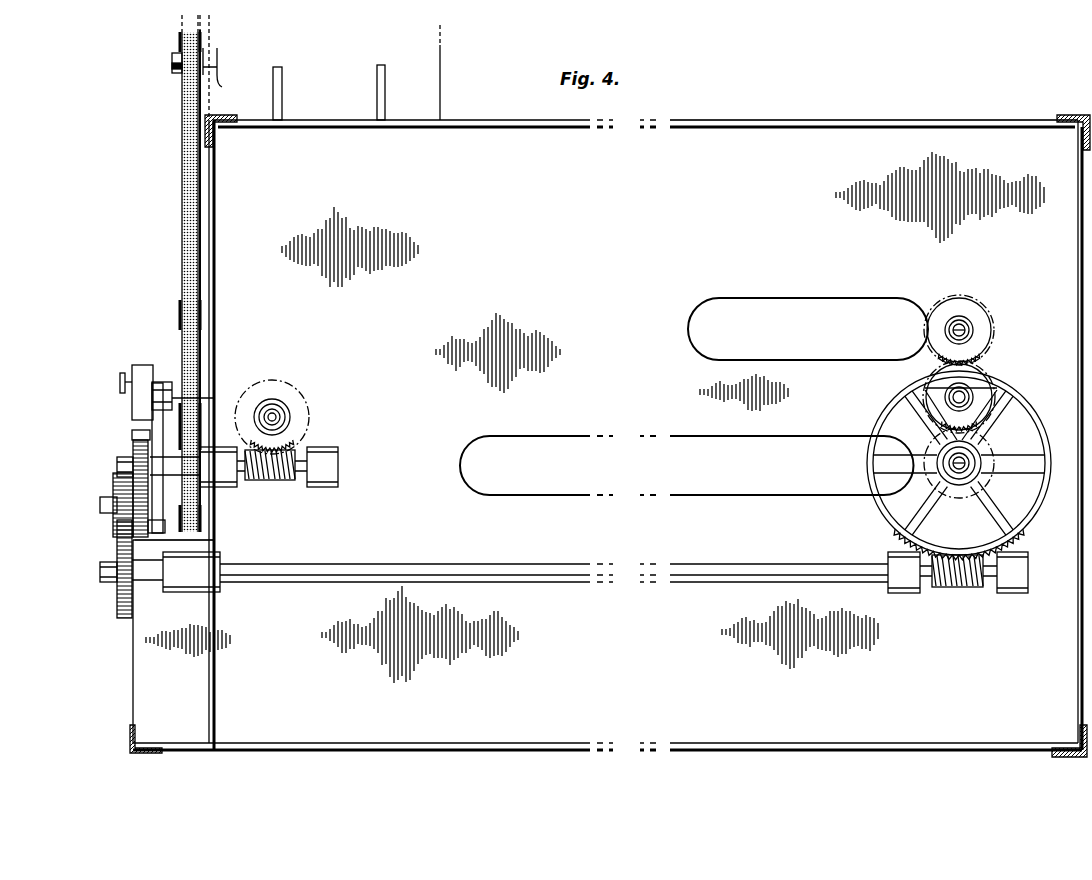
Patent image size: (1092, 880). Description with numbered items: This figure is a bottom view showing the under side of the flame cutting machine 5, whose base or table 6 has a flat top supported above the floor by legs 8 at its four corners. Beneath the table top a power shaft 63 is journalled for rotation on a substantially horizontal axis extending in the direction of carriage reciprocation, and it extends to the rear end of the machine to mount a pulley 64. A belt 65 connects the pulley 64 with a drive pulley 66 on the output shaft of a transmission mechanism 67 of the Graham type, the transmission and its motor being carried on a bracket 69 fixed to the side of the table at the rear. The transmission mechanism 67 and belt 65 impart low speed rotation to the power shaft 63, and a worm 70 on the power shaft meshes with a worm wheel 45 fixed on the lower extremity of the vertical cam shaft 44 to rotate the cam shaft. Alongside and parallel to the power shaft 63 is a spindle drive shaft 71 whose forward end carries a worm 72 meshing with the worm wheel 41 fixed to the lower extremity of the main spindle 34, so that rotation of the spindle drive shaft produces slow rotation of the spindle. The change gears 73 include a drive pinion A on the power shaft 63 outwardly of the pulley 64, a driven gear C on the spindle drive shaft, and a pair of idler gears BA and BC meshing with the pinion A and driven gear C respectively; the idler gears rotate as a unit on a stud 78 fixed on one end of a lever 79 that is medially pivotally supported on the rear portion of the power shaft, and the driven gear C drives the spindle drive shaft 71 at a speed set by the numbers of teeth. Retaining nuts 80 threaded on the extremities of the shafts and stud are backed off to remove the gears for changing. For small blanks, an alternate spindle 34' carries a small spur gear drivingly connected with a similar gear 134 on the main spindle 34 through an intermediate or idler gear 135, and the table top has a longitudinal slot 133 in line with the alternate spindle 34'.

The flame cutting machine 5 is at (866, 108).
The base or table 6 is at (712, 152).
The legs 8 is at (222, 113).
The main spindle 34 is at (979, 457).
The alternate spindle 34' is at (989, 330).
The worm wheel 41 is at (882, 512).
The cam shaft 44 is at (275, 416).
The worm wheel 45 is at (310, 402).
The power shaft 63 is at (128, 462).
The pulley 64 is at (200, 425).
The belt 65 is at (180, 178).
The drive pulley 66 is at (172, 64).
The transmission mechanism 67 is at (318, 90).
The bracket 69 is at (393, 95).
The worm 70 is at (284, 481).
The spindle drive shaft 71 is at (320, 580).
The worm 72 is at (978, 588).
The change gears 73 is at (100, 527).
The stud 78 is at (100, 498).
The lever 79 is at (158, 430).
The retaining nuts 80 is at (108, 570).
The longitudinal slot 133 is at (835, 325).
The gear 134 is at (980, 480).
The intermediate or idler gear 135 is at (945, 372).
The drive pinion A is at (135, 440).
The idler gear BA is at (235, 542).
The idler gear BC is at (116, 470).
The driven gear C is at (120, 620).